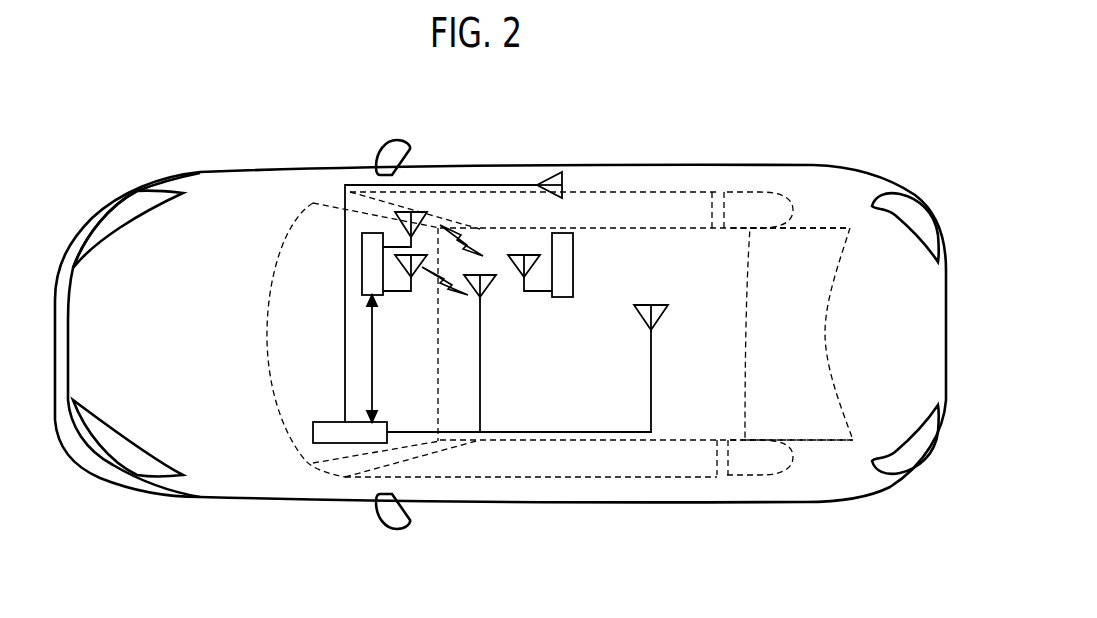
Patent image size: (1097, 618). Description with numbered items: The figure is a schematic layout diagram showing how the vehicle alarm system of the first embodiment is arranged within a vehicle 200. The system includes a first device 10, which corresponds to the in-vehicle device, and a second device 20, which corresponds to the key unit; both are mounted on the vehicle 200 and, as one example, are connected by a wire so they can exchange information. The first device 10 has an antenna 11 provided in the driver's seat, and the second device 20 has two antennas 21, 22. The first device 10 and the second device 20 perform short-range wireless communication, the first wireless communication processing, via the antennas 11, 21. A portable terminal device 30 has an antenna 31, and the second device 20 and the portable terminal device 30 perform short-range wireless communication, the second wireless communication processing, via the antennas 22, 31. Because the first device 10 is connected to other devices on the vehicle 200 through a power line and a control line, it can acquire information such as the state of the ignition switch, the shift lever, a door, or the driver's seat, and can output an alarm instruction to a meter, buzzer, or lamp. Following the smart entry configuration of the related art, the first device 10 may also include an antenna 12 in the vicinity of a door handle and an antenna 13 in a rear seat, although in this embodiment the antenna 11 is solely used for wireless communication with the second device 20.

The vehicle 200 is at (512, 500).
The first device 10 is at (332, 440).
The second device 20 is at (362, 266).
The antenna 21 is at (418, 283).
The antenna 22 is at (418, 212).
The antenna 11 is at (487, 296).
The antenna 12 is at (548, 173).
The antenna 13 is at (660, 328).
The portable terminal device 30 is at (573, 266).
The antenna 31 is at (521, 255).